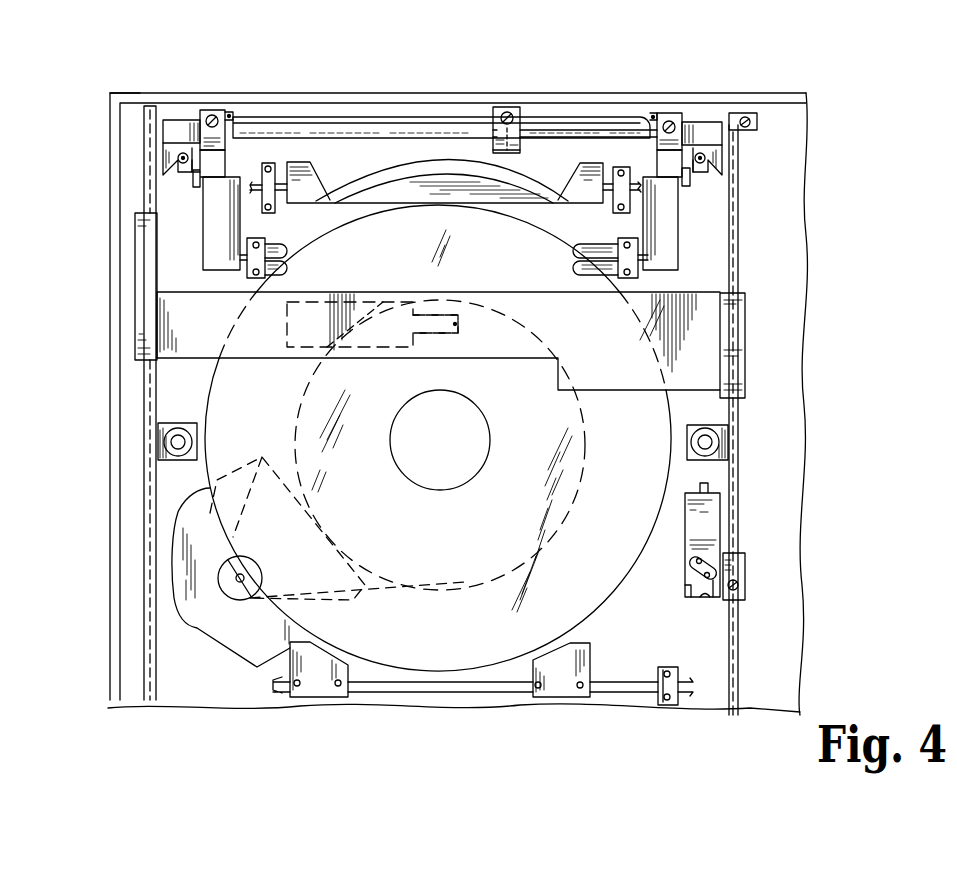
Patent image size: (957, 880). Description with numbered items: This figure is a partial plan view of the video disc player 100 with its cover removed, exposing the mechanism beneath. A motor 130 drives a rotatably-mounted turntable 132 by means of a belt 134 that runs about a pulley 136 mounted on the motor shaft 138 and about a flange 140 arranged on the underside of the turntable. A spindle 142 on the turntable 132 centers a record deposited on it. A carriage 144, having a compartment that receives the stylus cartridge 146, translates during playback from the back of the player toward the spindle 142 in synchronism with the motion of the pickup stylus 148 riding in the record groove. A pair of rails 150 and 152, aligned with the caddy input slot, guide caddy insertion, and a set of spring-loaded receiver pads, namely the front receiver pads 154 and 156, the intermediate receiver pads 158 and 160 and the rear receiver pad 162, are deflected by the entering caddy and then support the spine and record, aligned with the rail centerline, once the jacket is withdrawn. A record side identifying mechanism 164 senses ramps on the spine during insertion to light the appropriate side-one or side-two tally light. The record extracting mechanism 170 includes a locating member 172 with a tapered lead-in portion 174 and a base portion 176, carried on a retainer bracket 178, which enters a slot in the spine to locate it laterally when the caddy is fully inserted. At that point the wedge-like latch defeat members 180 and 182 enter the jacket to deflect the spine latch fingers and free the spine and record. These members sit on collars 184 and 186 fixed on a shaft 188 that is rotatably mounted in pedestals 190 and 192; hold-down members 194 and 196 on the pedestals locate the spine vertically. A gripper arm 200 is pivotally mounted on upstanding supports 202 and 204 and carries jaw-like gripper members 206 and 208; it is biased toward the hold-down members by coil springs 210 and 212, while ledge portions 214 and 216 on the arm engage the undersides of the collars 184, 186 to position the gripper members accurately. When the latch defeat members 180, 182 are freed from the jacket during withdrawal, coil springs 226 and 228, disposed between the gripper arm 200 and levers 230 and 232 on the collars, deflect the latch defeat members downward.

The video disc player 100 is at (42, 408).
The motor 130 is at (260, 663).
The turntable 132 is at (611, 603).
The belt 134 is at (398, 585).
The pulley 136 is at (243, 593).
The motor shaft 138 is at (245, 577).
The flange 140 is at (540, 546).
The spindle 142 is at (482, 441).
The carriage 144 is at (566, 300).
The stylus cartridge 146 is at (373, 300).
The pickup stylus 148 is at (458, 328).
The rail 150 is at (144, 630).
The rail 152 is at (736, 668).
The front receiver pad 154 is at (340, 667).
The front receiver pad 156 is at (570, 643).
The intermediate receiver pad 158 is at (178, 436).
The intermediate receiver pad 160 is at (692, 443).
The rear receiver pad 162 is at (531, 189).
The record side identifying mechanism 164 is at (712, 525).
The record extracting mechanism 170 is at (136, 78).
The locating member 172 is at (527, 132).
The tapered lead-in portion 174 is at (508, 148).
The base portion 176 is at (500, 130).
The retainer bracket 178 is at (517, 105).
The latch defeat member 180 is at (165, 162).
The latch defeat member 182 is at (721, 162).
The collar 184 is at (178, 125).
The collar 186 is at (704, 127).
The shaft 188 is at (313, 128).
The pedestal 190 is at (217, 110).
The pedestal 192 is at (673, 113).
The hold-down member 194 is at (228, 157).
The hold-down member 196 is at (667, 138).
The gripper arm 200 is at (200, 238).
The upstanding support 202 is at (261, 240).
The upstanding support 204 is at (628, 240).
The gripper member 206 is at (210, 178).
The gripper member 208 is at (668, 183).
The coil spring 210 is at (229, 113).
The coil spring 212 is at (654, 113).
The ledge portion 214 is at (196, 183).
The ledge portion 216 is at (684, 186).
The coil spring 226 is at (183, 158).
The coil spring 228 is at (705, 158).
The lever 230 is at (190, 166).
The lever 232 is at (697, 172).